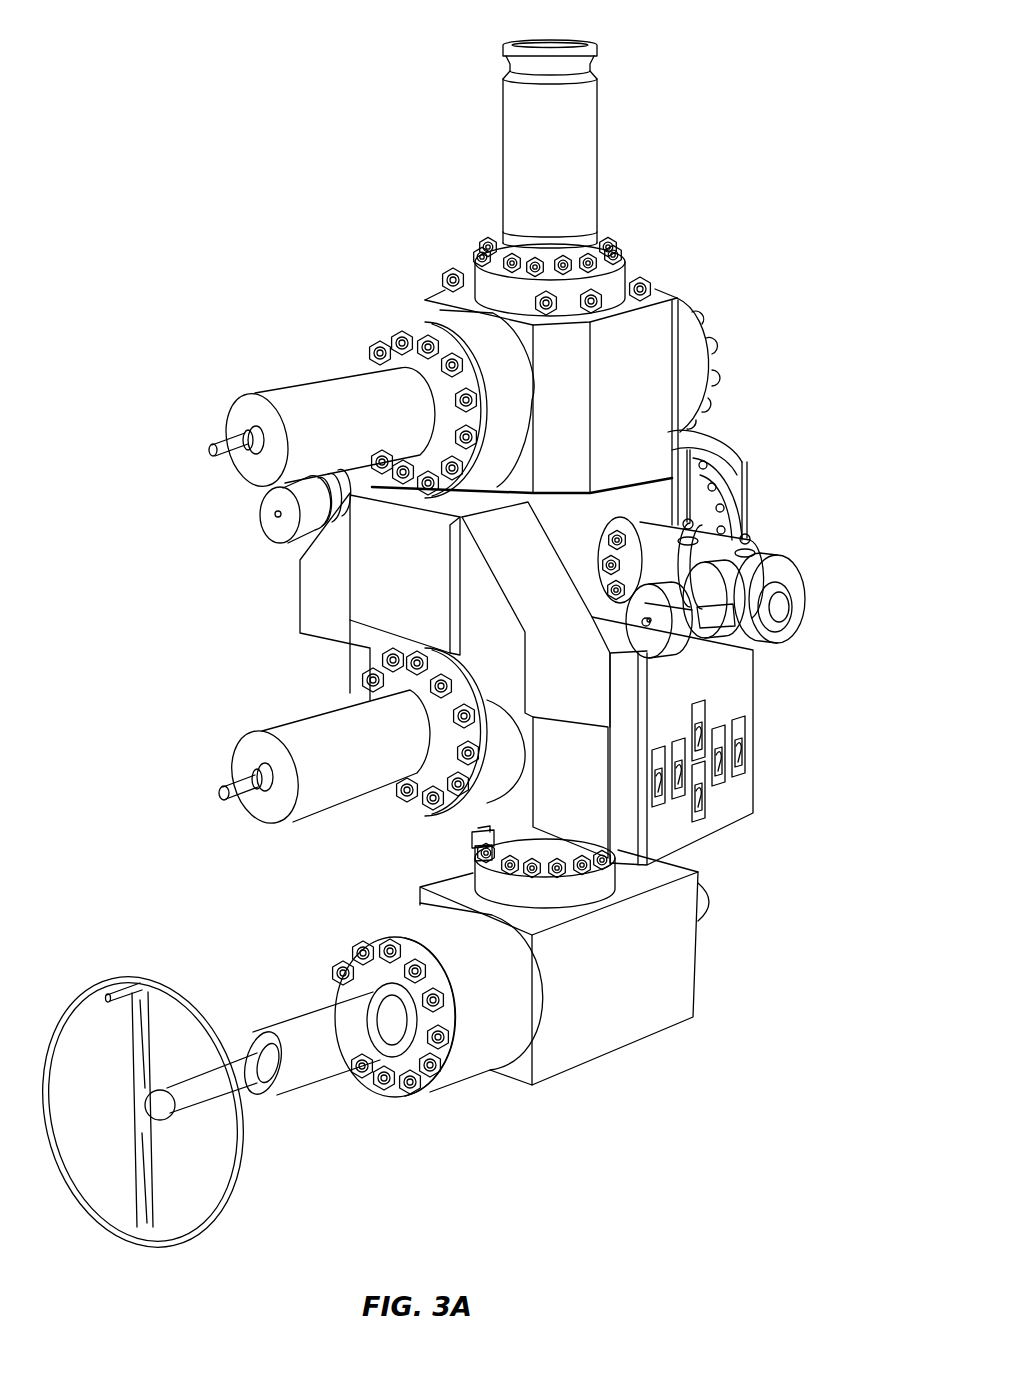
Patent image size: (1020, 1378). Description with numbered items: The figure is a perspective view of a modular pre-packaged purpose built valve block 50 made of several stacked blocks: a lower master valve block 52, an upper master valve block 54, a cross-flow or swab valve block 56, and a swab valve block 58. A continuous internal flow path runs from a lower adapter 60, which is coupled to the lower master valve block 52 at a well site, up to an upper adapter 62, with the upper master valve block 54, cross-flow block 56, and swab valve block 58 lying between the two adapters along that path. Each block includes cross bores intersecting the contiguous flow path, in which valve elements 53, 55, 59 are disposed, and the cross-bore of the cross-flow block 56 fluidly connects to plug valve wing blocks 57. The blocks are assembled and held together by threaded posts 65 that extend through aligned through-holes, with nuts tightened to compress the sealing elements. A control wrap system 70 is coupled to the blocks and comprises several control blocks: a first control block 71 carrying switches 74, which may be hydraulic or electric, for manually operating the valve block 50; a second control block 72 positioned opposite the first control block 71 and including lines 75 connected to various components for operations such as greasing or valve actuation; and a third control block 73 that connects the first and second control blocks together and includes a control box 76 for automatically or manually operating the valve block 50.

The modular pre-packaged purpose built valve block 50 is at (270, 112).
The upper adapter 62 is at (598, 139).
The threaded posts 65 is at (643, 278).
The swab valve block 58 is at (642, 386).
The cross-flow or swab valve block 56 is at (642, 507).
The lines 75 is at (745, 532).
The plug valve wing blocks 57 is at (758, 553).
The valve element 59 is at (303, 377).
The third control block 73 is at (318, 578).
The control box 76 is at (367, 582).
The control wrap system 70 is at (296, 627).
The second control block 72 is at (357, 685).
The valve element 55 is at (286, 720).
The upper master valve block 54 is at (480, 800).
The lower adapter 60 is at (487, 883).
The valve element 53 is at (400, 923).
The lower master valve block 52 is at (682, 963).
The first control block 71 is at (736, 682).
The switches 74 is at (728, 770).